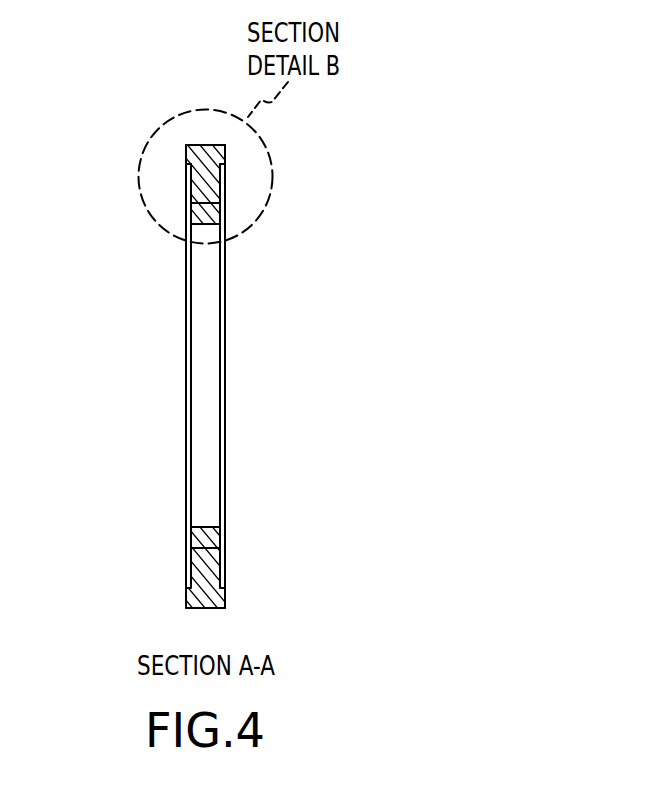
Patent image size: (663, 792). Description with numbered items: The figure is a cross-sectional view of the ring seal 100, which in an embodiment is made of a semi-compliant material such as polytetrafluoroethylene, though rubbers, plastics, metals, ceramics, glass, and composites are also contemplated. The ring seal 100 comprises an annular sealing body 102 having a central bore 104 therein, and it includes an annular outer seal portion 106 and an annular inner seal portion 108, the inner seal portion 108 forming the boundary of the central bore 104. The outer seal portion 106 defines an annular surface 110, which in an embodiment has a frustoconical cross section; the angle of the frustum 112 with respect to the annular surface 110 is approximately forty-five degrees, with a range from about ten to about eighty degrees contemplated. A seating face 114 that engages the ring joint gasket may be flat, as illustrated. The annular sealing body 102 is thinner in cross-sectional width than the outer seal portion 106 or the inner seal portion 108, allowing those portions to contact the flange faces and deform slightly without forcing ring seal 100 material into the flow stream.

The ring seal 100 is at (290, 425).
The annular sealing body 102 is at (191, 180).
The central bore 104 is at (207, 363).
The annular outer seal portion 106 is at (186, 145).
The annular inner seal portion 108 is at (190, 218).
The annular surface 110 is at (205, 225).
The frustum 112 is at (225, 527).
The seating face 114 is at (207, 608).